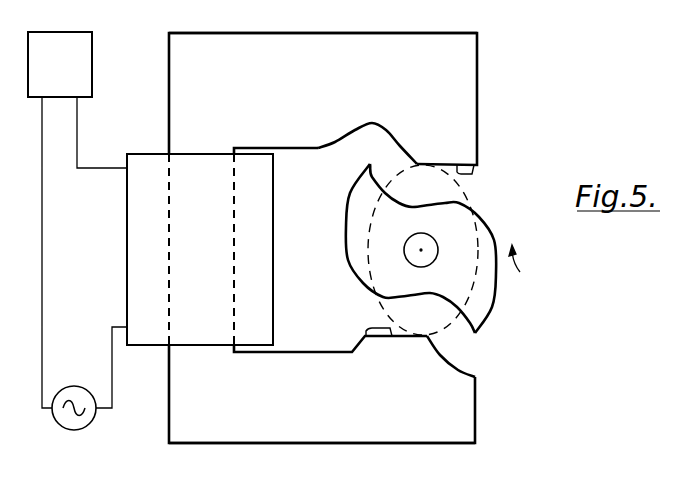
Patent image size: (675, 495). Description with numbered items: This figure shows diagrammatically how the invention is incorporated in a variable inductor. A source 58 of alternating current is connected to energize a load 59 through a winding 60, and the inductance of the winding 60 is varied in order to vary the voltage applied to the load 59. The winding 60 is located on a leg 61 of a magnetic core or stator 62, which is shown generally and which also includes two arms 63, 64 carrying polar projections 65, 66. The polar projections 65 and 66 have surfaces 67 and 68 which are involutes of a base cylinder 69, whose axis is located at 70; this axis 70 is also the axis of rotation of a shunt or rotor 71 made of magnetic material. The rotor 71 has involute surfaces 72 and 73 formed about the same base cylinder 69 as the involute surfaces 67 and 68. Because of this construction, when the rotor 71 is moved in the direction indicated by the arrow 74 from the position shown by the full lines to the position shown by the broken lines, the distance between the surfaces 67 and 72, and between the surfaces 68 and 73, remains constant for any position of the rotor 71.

The source of alternating current 58 is at (88, 424).
The load 59 is at (92, 80).
The winding 60 is at (137, 253).
The leg 61 is at (172, 324).
The magnetic core or stator 62 is at (241, 26).
The arm 63 is at (368, 48).
The arm 64 is at (321, 435).
The polar projection 65 is at (470, 140).
The polar projection 66 is at (422, 350).
The surface 67 is at (472, 184).
The surface 68 is at (392, 333).
The base cylinder 69 is at (431, 259).
The axis 70 is at (419, 246).
The shunt or rotor 71 is at (466, 196).
The involute surface 72 is at (484, 312).
The involute surface 73 is at (362, 188).
The arrow 74 is at (518, 261).